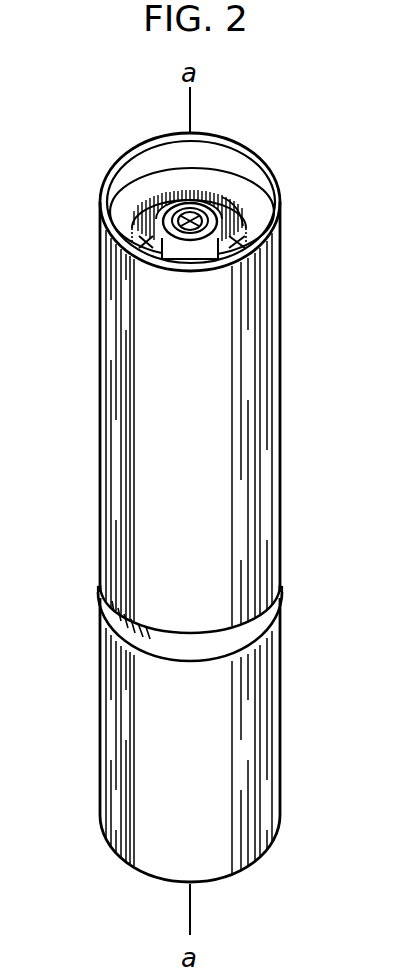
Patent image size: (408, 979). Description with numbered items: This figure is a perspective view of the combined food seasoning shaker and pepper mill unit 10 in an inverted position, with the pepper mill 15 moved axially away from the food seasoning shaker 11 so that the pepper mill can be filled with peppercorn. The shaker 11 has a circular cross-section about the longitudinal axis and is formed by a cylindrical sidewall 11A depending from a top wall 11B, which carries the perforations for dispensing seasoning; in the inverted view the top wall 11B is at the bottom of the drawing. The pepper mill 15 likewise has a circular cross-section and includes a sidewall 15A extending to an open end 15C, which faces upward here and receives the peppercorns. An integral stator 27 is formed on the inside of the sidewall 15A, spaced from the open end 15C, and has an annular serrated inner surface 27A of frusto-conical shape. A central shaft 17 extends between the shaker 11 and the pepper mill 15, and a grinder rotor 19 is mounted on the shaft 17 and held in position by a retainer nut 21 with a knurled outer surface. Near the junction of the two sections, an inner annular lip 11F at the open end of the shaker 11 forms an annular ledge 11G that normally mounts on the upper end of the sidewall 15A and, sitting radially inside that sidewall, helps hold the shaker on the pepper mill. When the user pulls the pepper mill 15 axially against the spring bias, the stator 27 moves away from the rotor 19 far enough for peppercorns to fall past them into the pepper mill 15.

The shaker and pepper mill unit 10 is at (316, 158).
The food seasoning shaker 11 is at (286, 707).
The cylindrical sidewall 11A is at (262, 666).
The top wall 11B is at (234, 875).
The inner annular lip 11F is at (157, 640).
The annular ledge 11G is at (108, 620).
The pepper mill 15 is at (286, 385).
The sidewall 15A is at (262, 335).
The lower open end 15C is at (152, 168).
The central shaft 17 is at (195, 215).
The grinder wheel or rotor 19 is at (152, 240).
The retainer nut 21 is at (224, 212).
The stator 27 is at (123, 222).
The annular serrated inner surface 27A is at (229, 212).